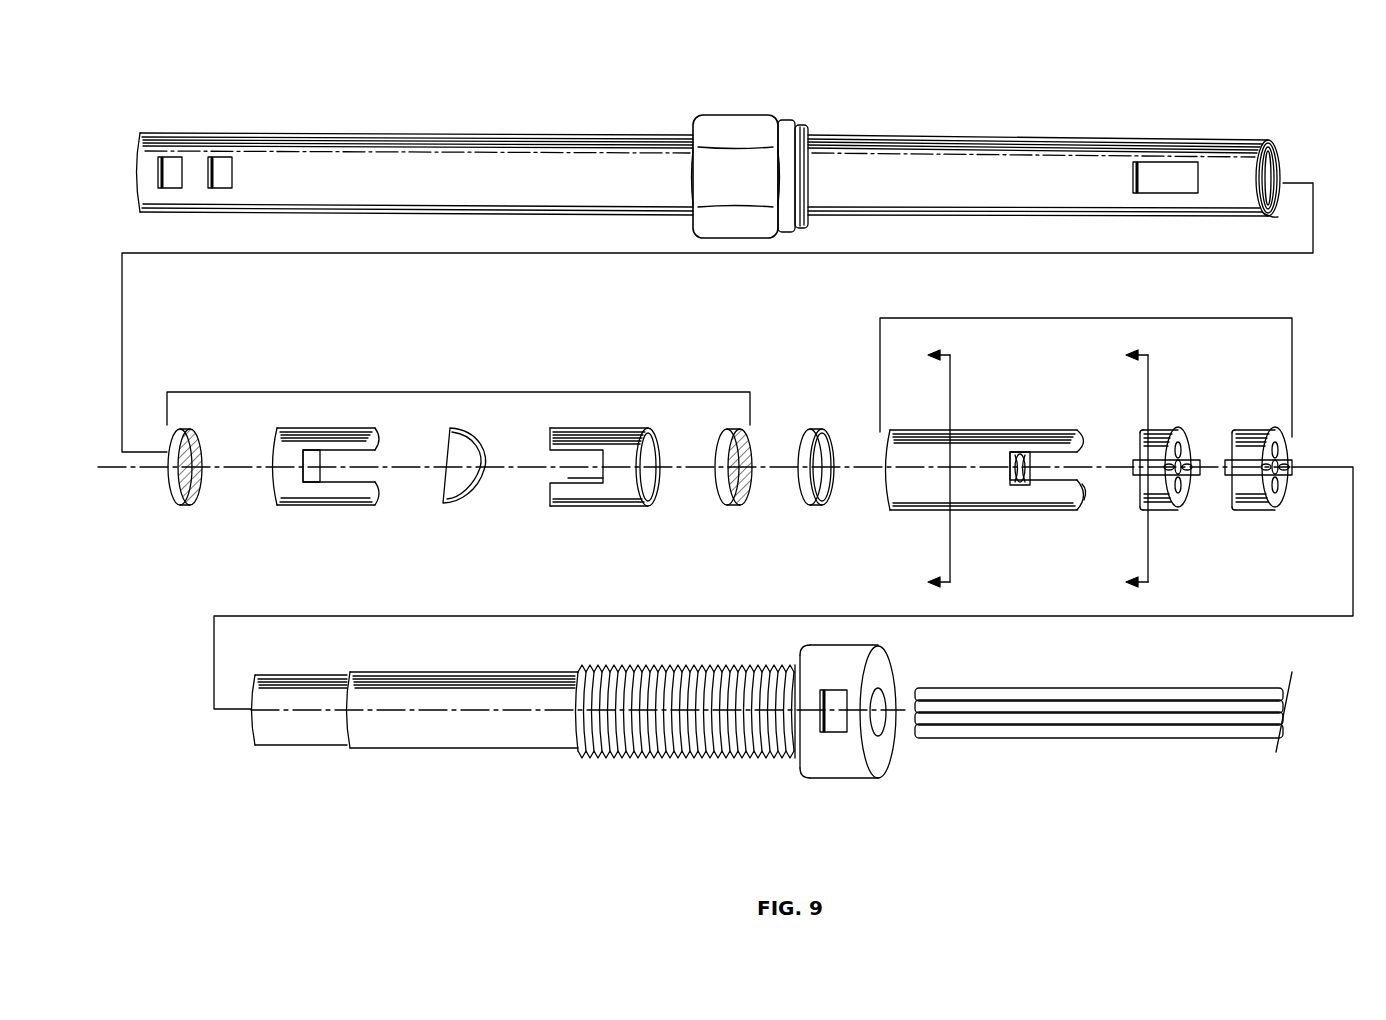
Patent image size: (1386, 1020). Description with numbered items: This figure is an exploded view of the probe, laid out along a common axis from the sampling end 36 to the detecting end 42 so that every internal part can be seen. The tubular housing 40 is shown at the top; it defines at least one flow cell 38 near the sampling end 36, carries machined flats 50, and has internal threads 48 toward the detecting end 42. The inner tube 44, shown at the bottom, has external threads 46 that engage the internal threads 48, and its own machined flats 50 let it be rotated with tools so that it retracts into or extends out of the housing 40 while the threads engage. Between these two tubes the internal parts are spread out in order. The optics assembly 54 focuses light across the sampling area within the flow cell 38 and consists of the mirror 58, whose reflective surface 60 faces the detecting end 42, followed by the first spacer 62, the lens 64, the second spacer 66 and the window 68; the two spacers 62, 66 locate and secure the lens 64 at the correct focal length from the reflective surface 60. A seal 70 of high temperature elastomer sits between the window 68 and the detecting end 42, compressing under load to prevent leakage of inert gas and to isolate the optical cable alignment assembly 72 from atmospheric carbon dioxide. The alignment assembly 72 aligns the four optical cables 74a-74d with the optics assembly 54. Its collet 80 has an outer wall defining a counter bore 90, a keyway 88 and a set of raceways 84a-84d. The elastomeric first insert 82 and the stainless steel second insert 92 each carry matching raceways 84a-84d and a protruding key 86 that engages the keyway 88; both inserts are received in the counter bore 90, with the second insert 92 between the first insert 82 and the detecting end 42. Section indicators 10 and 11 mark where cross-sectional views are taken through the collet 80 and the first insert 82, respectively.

The sampling end 36 is at (140, 152).
The flow cell 38 is at (183, 160).
The housing 40 is at (938, 136).
The detecting end 42 is at (1272, 213).
The inner tube 44 is at (440, 748).
The external threads 46 is at (620, 668).
The internal threads 48 is at (1275, 148).
The machined flats 50 is at (1162, 195).
The optics assembly 54 is at (457, 392).
The mirror 58 is at (179, 494).
The reflective surface 60 is at (193, 490).
The first spacer 62 is at (322, 505).
The lens 64 is at (458, 503).
The second spacer 66 is at (598, 507).
The window 68 is at (738, 505).
The seal 70 is at (822, 505).
The optical cable alignment assembly 72 is at (1097, 318).
The optical cables 74a-74d is at (1130, 737).
The collet 80 is at (980, 510).
The first insert 82 is at (1120, 458).
The raceways 84a-84d is at (1292, 465).
The protruding key 86 is at (1133, 465).
The keyway 88 is at (1013, 456).
The counter bore 90 is at (1088, 492).
The second insert 92 is at (1302, 472).
The section line 10 is at (924, 472).
The section line 11 is at (1125, 472).